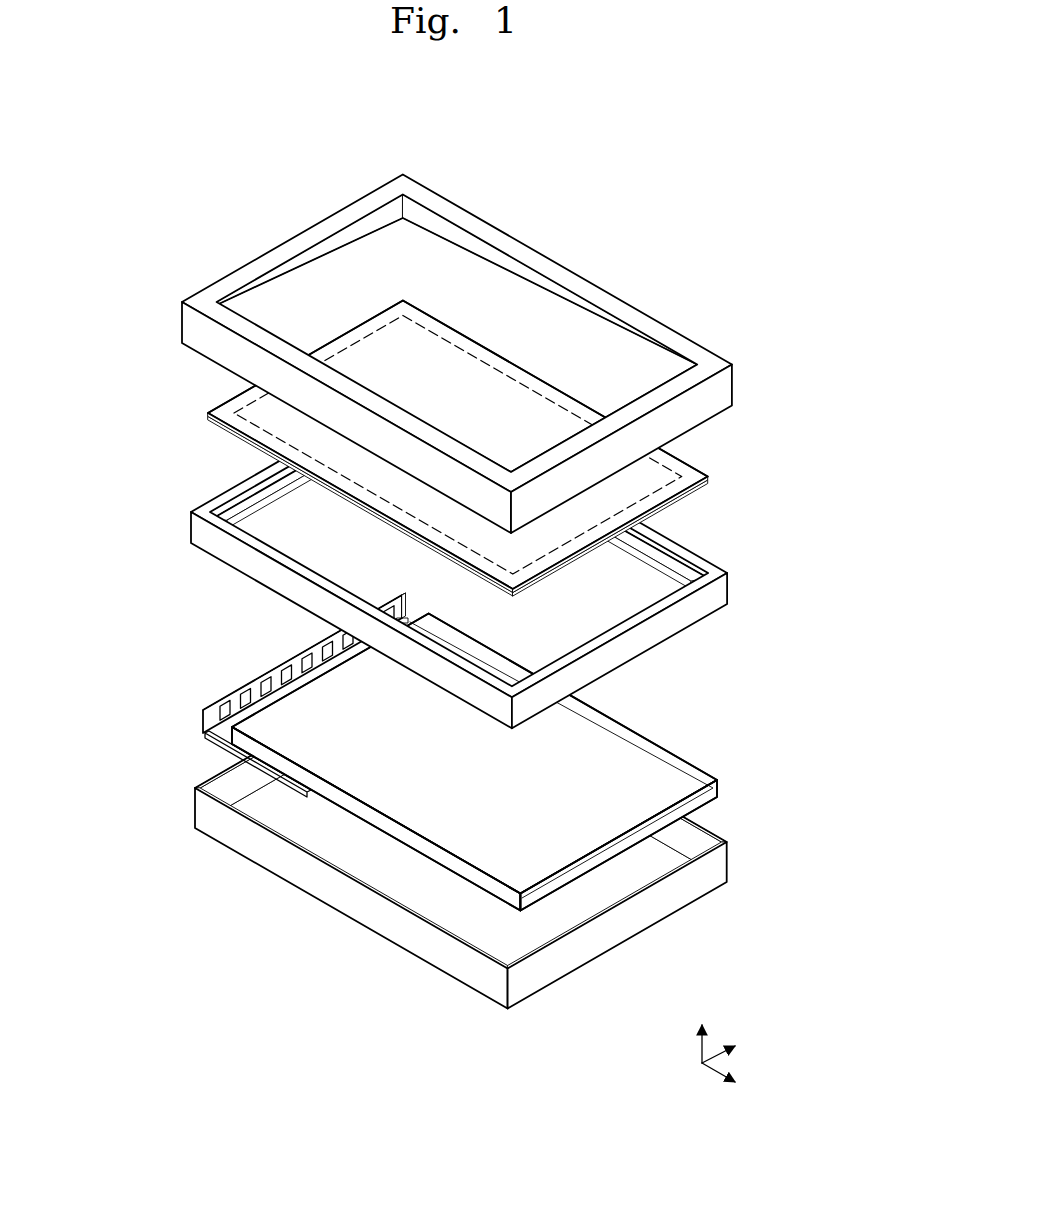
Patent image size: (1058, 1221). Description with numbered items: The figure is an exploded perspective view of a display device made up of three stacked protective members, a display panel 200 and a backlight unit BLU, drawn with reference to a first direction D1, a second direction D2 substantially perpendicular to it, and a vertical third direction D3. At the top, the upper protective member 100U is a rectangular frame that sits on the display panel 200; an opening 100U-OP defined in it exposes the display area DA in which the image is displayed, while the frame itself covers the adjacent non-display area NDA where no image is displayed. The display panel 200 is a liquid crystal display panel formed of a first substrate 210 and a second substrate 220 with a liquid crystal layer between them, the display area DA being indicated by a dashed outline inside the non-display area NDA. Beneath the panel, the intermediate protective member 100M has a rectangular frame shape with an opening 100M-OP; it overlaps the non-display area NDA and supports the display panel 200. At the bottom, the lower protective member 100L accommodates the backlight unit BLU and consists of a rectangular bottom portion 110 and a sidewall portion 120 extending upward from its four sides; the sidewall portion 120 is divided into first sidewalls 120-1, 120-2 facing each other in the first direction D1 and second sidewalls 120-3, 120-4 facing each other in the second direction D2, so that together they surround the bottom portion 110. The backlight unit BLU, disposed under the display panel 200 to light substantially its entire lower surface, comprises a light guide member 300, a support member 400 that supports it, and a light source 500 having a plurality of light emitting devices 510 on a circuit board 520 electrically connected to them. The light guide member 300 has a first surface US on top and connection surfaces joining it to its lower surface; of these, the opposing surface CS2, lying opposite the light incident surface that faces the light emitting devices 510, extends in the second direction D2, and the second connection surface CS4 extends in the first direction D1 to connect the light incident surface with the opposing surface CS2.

The upper protective member 100U is at (502, 354).
The opening 100U-OP is at (527, 311).
The intermediate protective member 100M is at (524, 558).
The opening 100M-OP is at (651, 590).
The lower protective member 100L is at (469, 835).
The bottom portion 110 is at (434, 887).
The sidewall portion 120 is at (469, 835).
The first sidewall 120-1 is at (238, 784).
The first sidewall 120-2 is at (684, 897).
The second sidewall 120-3 is at (688, 843).
The second sidewall 120-4 is at (264, 855).
The display panel 200 is at (495, 449).
The first substrate 210 is at (703, 487).
The second substrate 220 is at (701, 475).
The display area DA is at (262, 411).
The non-display area NDA is at (208, 413).
The backlight unit BLU is at (376, 752).
The light guide member 300 is at (311, 707).
The support member 400 is at (244, 678).
The light source 500 is at (247, 695).
The light emitting device 510 is at (222, 705).
The circuit board 520 is at (218, 728).
The first surface US is at (641, 752).
The opposing surface CS2 is at (699, 797).
The second connection surface CS4 is at (482, 877).
The first direction D1 is at (737, 1080).
The second direction D2 is at (737, 1047).
The third direction D3 is at (704, 1029).